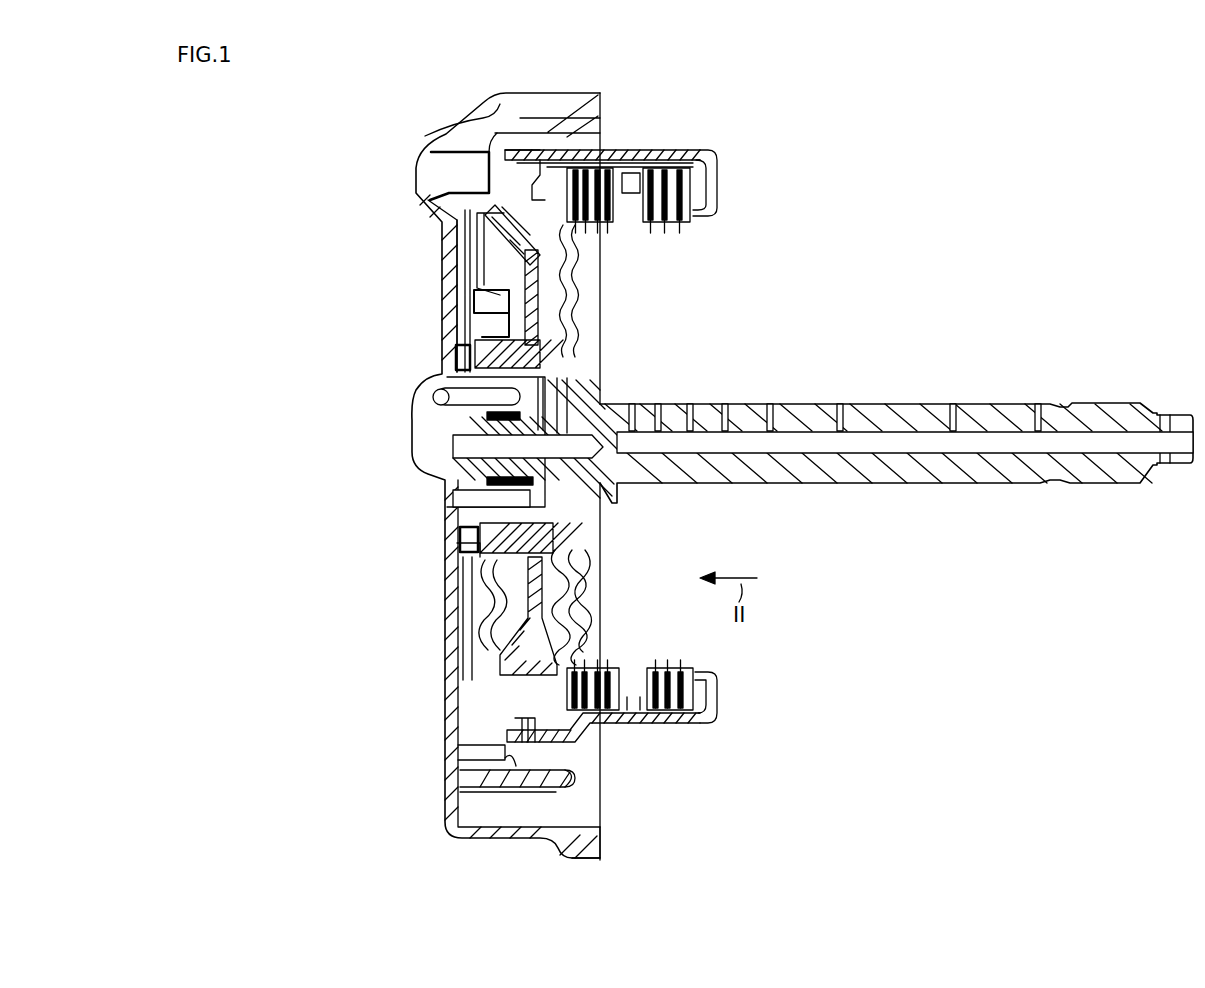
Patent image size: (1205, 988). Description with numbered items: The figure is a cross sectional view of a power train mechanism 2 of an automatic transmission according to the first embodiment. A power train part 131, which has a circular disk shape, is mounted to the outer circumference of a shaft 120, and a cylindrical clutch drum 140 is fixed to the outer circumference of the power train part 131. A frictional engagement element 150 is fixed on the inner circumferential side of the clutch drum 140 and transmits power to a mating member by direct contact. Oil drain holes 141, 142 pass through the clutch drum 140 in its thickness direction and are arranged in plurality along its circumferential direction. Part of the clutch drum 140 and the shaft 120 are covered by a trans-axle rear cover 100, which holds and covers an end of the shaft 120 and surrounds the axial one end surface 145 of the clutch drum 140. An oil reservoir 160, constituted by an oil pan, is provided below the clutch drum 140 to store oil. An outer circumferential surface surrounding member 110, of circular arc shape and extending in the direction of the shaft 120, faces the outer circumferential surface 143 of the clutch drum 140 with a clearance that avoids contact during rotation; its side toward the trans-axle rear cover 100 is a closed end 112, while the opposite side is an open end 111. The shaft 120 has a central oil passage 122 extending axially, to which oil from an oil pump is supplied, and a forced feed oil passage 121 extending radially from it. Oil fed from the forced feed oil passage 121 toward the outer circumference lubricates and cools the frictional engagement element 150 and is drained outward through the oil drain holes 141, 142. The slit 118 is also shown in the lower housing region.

The motor 2 is at (978, 183).
The trans-axle rear cover 100 is at (582, 858).
The outer circumferential surface surrounding member 110 is at (552, 784).
The open end 111 is at (570, 780).
The closed end 112 is at (466, 748).
The slit 118 is at (508, 762).
The shaft 120 is at (767, 485).
The forced feed oil passage 121 is at (630, 403).
The central oil passage 122 is at (976, 446).
The power train part 131 is at (568, 262).
The clutch drum 140 is at (719, 168).
The oil drain hole 141 is at (680, 151).
The oil drain hole 142 is at (607, 152).
The outer circumferential surface 143 is at (537, 150).
The axial one end surface 145 is at (492, 150).
The frictional engagement element 150 is at (690, 223).
The oil reservoir 160 is at (622, 821).